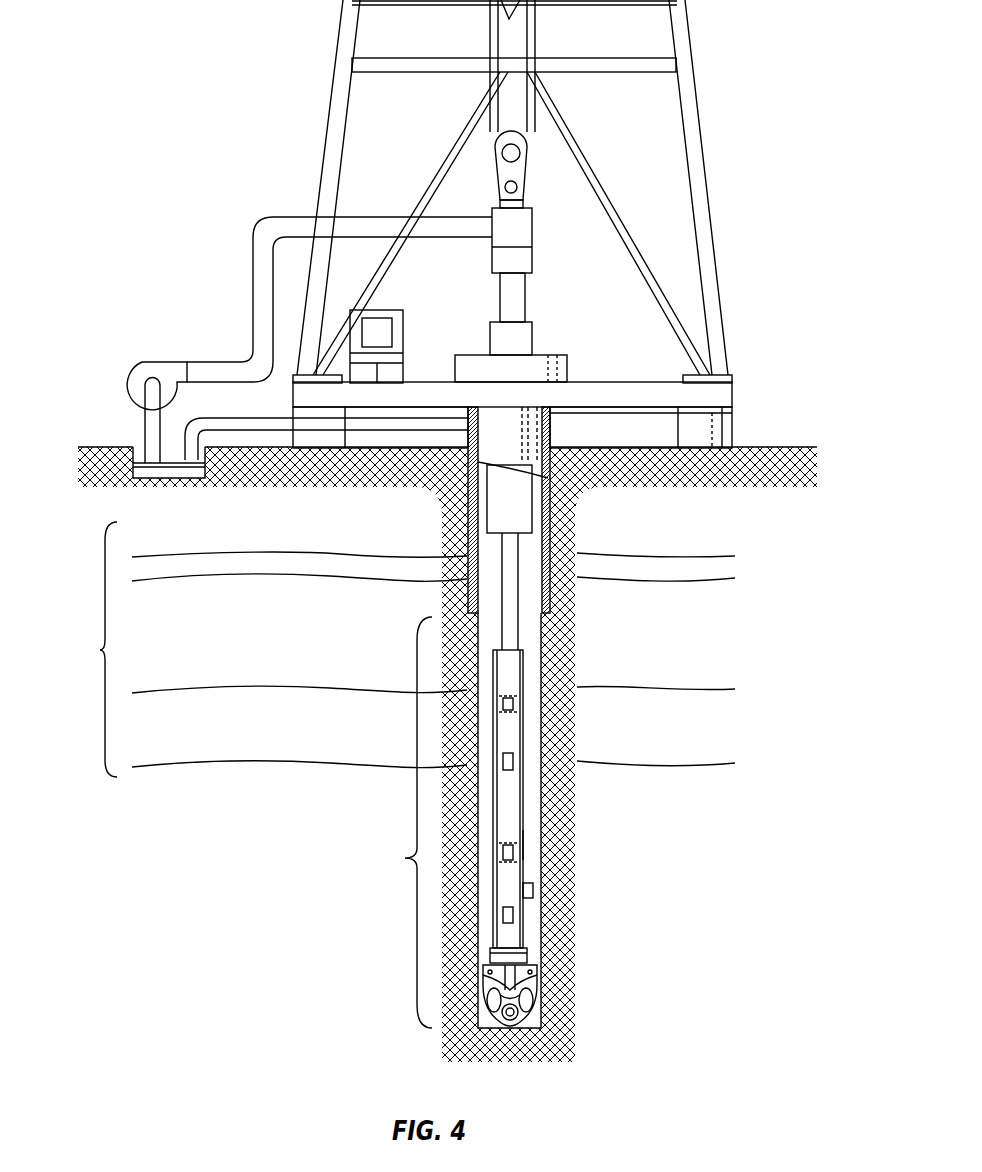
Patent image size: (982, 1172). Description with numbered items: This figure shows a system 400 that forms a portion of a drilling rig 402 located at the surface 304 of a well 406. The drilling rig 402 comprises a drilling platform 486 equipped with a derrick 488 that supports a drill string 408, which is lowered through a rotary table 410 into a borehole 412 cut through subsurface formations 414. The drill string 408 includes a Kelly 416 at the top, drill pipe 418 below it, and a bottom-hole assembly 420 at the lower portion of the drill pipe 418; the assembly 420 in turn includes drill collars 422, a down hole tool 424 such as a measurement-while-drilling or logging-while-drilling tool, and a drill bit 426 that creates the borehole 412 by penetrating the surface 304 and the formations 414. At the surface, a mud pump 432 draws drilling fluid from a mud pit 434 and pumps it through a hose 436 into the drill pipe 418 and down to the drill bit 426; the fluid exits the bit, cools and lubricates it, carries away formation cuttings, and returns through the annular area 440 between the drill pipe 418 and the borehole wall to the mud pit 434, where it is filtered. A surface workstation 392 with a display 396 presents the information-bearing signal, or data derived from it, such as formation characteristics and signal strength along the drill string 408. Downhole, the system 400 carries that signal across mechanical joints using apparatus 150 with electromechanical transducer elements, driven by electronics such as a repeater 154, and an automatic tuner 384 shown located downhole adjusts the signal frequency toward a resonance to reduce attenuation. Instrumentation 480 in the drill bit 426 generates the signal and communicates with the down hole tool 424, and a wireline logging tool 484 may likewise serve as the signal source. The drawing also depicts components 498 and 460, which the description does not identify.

The system 400 is at (184, 108).
The drilling rig 402 is at (544, 191).
The derrick 488 is at (695, 92).
The hose 436 is at (252, 280).
The mud pump 432 is at (152, 362).
The mud pit 434 is at (142, 452).
The surface workstation 392 is at (414, 324).
The display 396 is at (392, 337).
The Kelly 416 is at (527, 297).
The top drive / swivel block 498 is at (532, 337).
The rotary table 410 is at (568, 365).
The drilling platform 486 is at (732, 392).
The well 406 is at (565, 440).
The surface 304 is at (755, 448).
The drill collars 422 is at (533, 527).
The subsurface formations 414 is at (389, 649).
The drill pipe 418 is at (517, 630).
The annular area 440 is at (533, 652).
The apparatus 150 is at (573, 673).
The down hole tool 424 is at (513, 703).
The repeater 154 is at (601, 745).
The tuner 384 is at (513, 760).
The drill string 408 is at (533, 786).
The borehole 412 is at (537, 843).
The wireline logging tool 484 is at (515, 855).
The power / sensor module 460 is at (518, 913).
The drill bit 426 is at (532, 973).
The instrumentation 480 is at (535, 985).
The bottom-hole assembly 420 is at (452, 820).